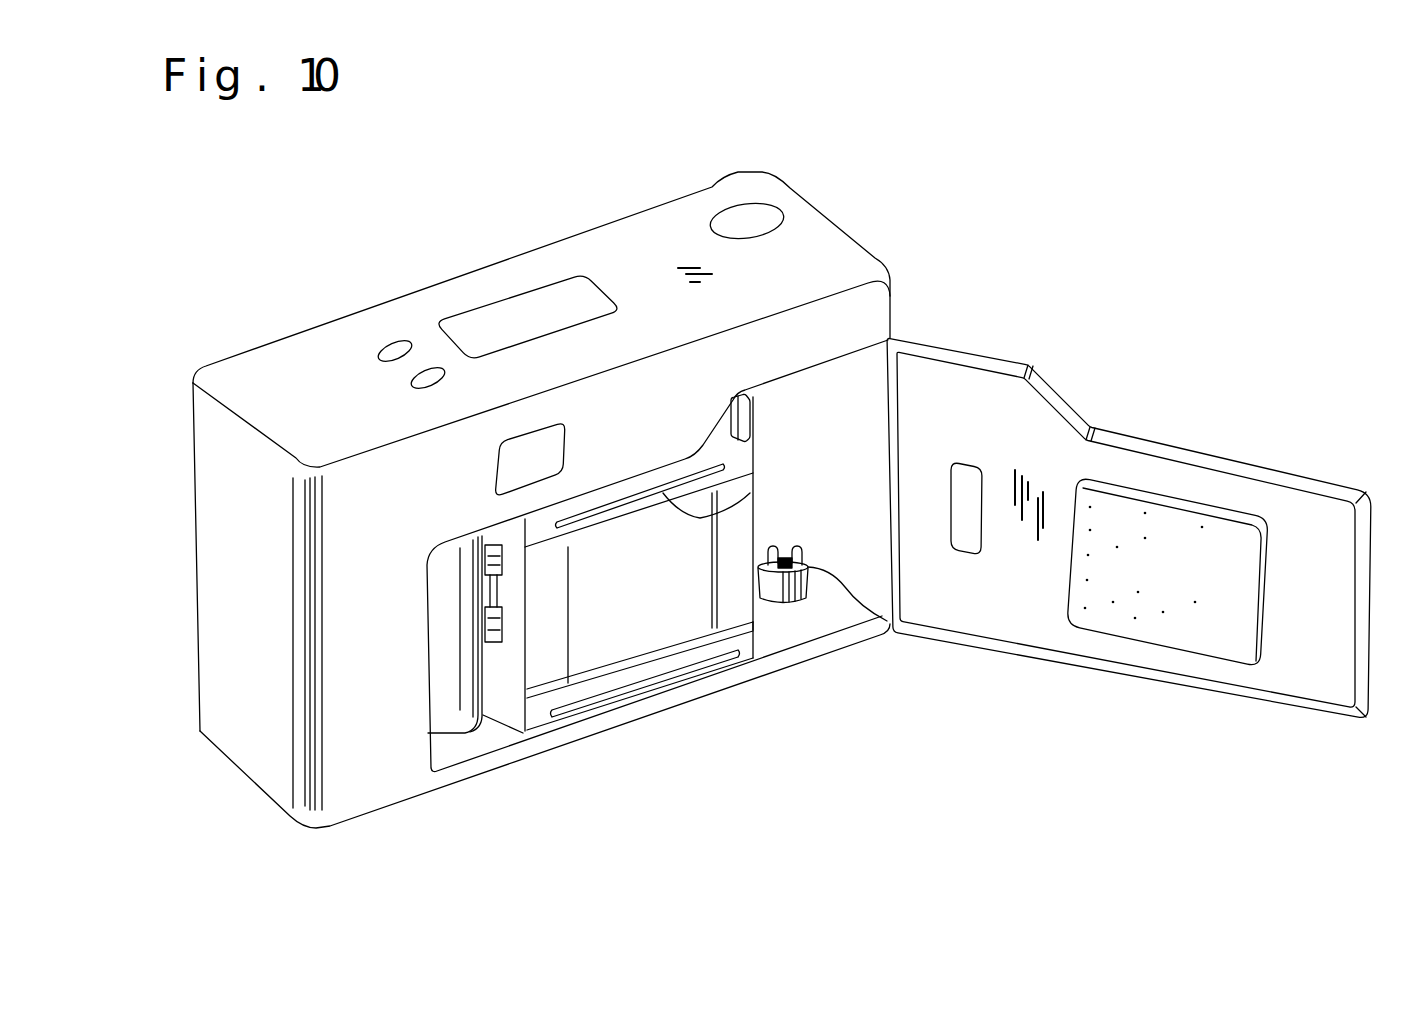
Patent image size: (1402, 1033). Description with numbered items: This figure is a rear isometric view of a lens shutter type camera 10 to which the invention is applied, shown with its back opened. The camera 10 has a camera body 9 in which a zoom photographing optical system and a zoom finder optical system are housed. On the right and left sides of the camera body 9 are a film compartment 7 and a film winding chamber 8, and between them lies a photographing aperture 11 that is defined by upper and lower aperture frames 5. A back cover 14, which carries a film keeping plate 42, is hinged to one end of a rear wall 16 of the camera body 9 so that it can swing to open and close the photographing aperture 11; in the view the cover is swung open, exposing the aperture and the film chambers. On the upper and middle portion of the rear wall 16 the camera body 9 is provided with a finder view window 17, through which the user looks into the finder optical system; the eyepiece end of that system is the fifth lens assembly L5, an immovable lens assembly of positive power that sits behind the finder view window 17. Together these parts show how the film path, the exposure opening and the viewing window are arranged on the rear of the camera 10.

The camera 10 is at (865, 128).
The camera body 9 is at (823, 243).
The aperture frames 5 is at (753, 474).
The fifth lens assembly L5 is at (517, 460).
The finder view window 17 is at (548, 470).
The back cover 14 is at (1060, 400).
The film keeping plate 42 is at (1197, 503).
The photographing aperture 11 is at (630, 613).
The film compartment 7 is at (779, 639).
The film winding chamber 8 is at (477, 742).
The rear wall 16 is at (345, 752).